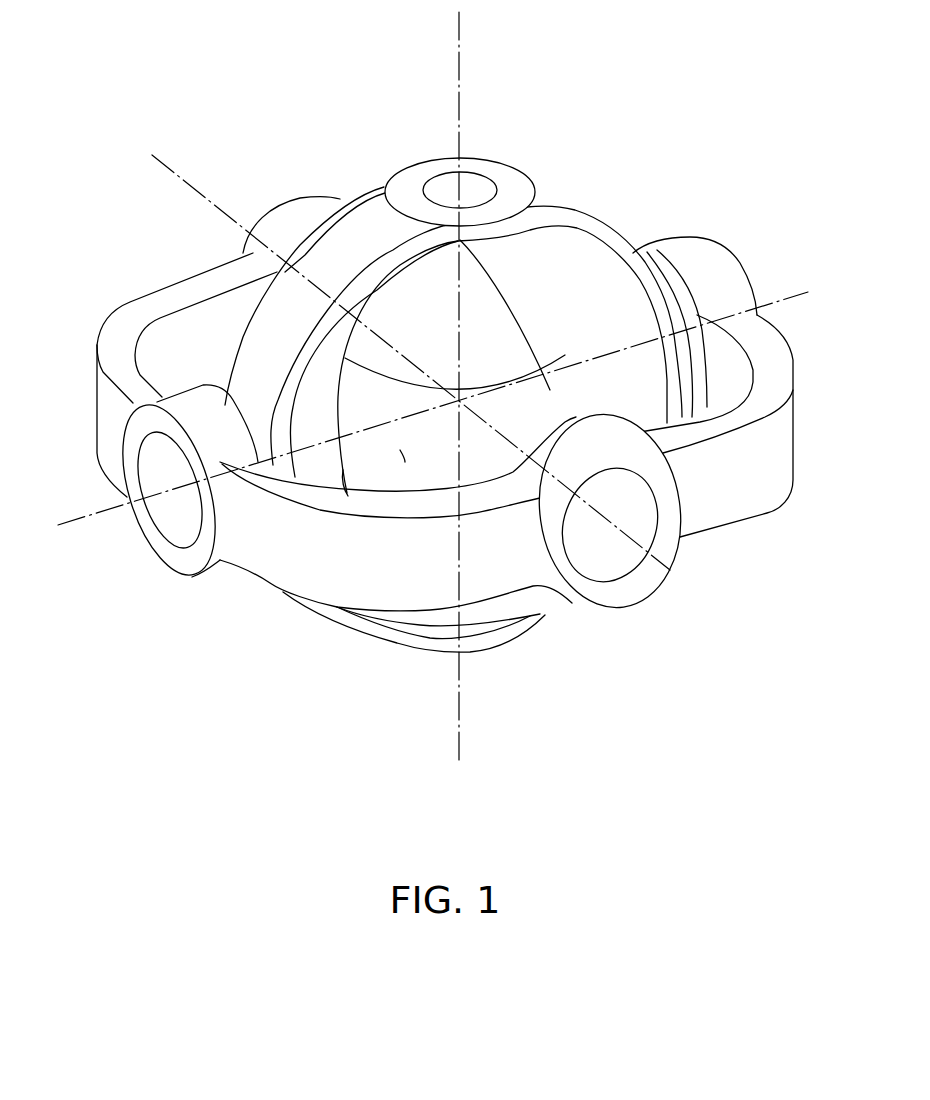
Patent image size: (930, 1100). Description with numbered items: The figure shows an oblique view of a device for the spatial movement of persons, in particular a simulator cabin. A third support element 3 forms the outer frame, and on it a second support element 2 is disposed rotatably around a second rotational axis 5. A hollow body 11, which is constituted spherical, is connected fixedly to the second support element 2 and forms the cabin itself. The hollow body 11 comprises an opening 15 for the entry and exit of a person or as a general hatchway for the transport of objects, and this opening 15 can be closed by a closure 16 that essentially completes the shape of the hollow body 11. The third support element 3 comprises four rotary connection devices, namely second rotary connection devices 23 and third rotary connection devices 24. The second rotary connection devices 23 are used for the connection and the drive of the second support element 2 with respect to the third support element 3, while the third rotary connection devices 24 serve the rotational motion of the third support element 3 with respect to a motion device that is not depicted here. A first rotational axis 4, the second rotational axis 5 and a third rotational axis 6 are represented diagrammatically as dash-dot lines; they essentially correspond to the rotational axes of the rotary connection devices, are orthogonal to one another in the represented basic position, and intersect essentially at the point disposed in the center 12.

The second support element 2 is at (347, 245).
The third support element 3 is at (265, 540).
The first rotational axis 4 is at (460, 37).
The second rotational axis 5 is at (73, 522).
The third rotational axis 6 is at (197, 195).
The hollow body 11 is at (542, 262).
The center 12 is at (432, 412).
The opening 15 is at (343, 473).
The closure 16 is at (405, 458).
The second rotary connection devices 23 is at (187, 560).
The third rotary connection devices 24 is at (288, 228).